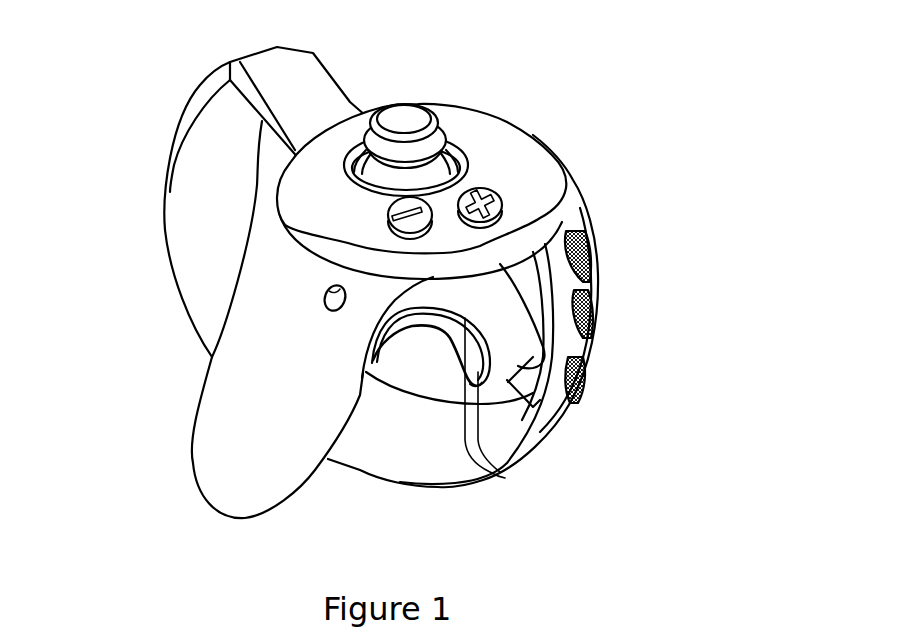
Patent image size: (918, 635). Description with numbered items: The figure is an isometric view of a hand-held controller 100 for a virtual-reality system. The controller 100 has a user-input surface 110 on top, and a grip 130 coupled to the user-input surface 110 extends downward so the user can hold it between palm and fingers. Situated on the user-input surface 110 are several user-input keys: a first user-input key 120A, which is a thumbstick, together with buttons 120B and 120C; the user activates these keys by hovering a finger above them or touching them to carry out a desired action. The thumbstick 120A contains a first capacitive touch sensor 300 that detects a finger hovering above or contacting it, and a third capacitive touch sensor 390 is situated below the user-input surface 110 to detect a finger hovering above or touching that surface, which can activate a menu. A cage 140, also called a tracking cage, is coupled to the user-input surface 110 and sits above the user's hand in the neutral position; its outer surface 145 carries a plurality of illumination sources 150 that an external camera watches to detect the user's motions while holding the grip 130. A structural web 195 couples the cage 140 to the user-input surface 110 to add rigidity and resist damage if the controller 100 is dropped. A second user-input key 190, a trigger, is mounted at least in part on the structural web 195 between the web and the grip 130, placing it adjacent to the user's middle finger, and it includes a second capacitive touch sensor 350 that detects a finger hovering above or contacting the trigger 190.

The hand-held controller 100 is at (394, 285).
The user-input surface 110 is at (535, 190).
The first user-input key 120A is at (404, 119).
The button 120B is at (484, 192).
The button 120C is at (388, 220).
The grip 130 is at (290, 437).
The cage 140 is at (190, 150).
The outer surface 145 is at (578, 221).
The illumination sources 150 is at (595, 258).
The second user-input key 190 is at (465, 355).
The structural web 195 is at (540, 380).
The first capacitive touch sensor 300 is at (367, 112).
The second capacitive touch sensor 350 is at (480, 440).
The third capacitive touch sensor 390 is at (348, 254).